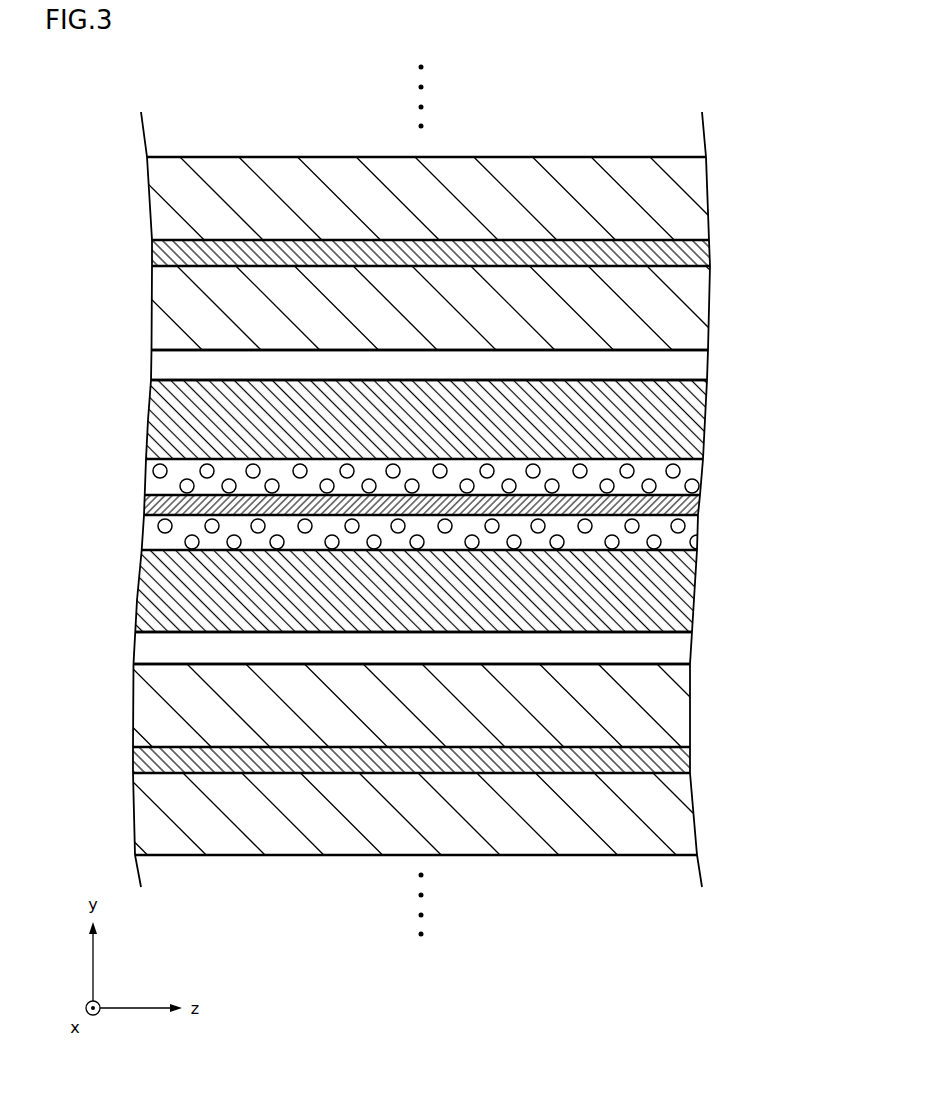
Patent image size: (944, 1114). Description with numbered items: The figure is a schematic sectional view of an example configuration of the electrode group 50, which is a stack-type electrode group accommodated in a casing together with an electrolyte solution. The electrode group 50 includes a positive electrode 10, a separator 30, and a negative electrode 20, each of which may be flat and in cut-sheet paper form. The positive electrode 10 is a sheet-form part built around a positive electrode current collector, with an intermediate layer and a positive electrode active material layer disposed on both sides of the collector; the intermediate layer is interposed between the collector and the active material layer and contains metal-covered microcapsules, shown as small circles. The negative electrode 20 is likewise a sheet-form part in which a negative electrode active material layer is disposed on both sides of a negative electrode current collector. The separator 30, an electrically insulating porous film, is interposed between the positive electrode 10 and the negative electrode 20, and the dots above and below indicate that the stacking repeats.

The electrode group 50 is at (188, 86).
The negative electrode 20 is at (814, 178).
The separator 30 is at (707, 368).
The positive electrode 10 is at (814, 396).